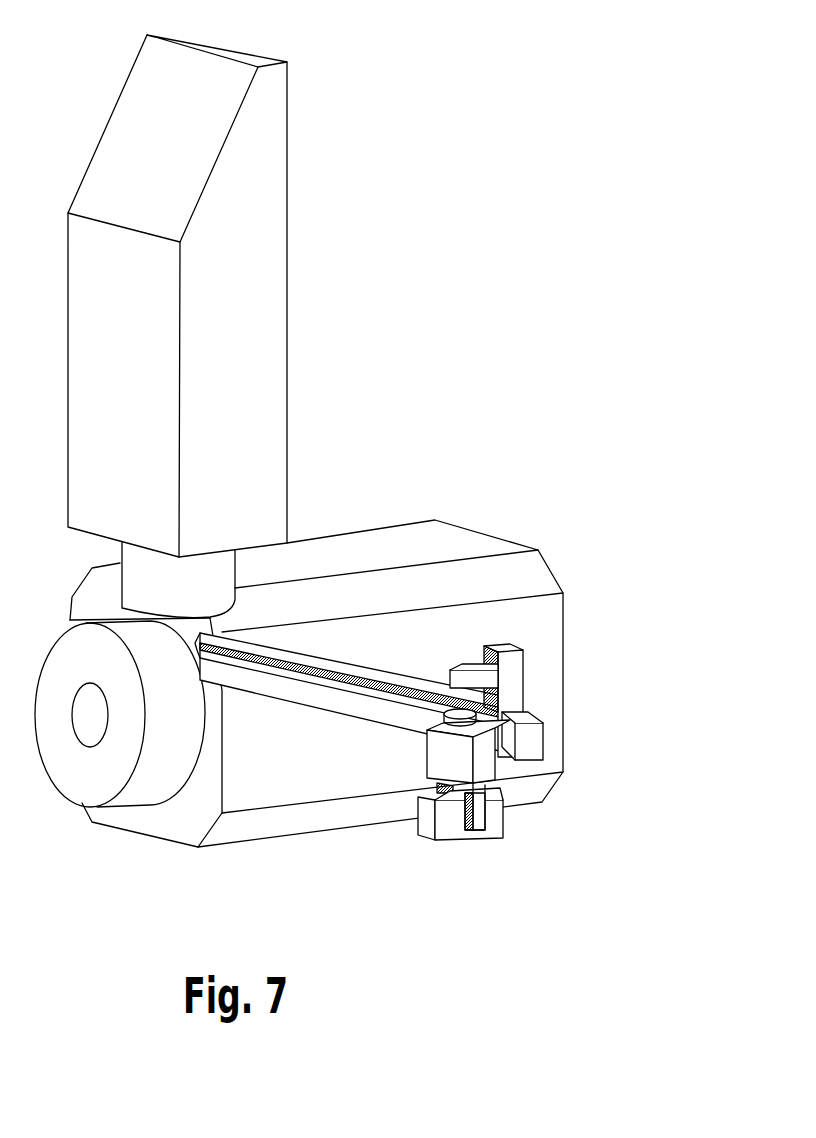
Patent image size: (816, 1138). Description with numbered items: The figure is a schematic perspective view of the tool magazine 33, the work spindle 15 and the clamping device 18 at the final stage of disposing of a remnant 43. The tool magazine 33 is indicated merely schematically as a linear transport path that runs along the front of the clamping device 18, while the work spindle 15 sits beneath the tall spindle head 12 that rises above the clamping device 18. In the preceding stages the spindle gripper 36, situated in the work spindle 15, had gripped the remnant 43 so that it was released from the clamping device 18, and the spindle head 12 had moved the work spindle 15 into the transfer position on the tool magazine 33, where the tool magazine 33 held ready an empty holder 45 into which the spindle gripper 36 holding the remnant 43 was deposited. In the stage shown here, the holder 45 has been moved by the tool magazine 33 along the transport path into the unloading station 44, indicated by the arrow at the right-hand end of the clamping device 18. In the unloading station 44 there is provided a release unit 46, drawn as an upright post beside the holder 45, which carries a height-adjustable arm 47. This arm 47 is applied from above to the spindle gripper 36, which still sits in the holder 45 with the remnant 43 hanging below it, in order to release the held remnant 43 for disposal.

The spindle head 12 is at (268, 307).
The work spindle 15 is at (138, 558).
The clamping device 18 is at (407, 543).
The tool magazine 33 is at (377, 713).
The spindle gripper 36 is at (482, 770).
The remnant 43 is at (462, 827).
The unloading station 44 is at (600, 627).
The holder 45 is at (530, 732).
The release unit 46 is at (513, 686).
The height-adjustable arm 47 is at (473, 677).